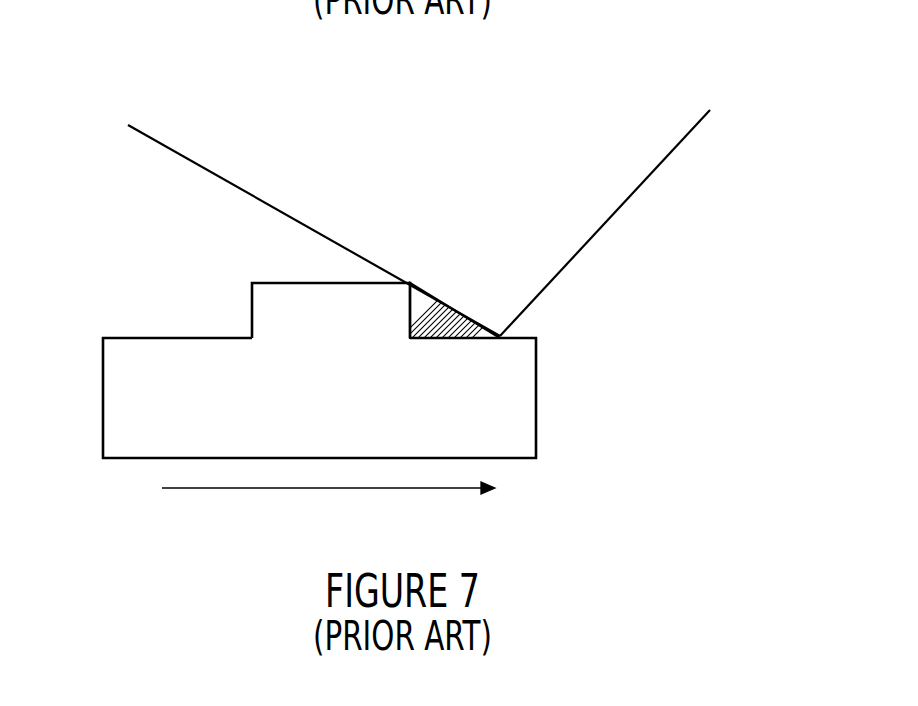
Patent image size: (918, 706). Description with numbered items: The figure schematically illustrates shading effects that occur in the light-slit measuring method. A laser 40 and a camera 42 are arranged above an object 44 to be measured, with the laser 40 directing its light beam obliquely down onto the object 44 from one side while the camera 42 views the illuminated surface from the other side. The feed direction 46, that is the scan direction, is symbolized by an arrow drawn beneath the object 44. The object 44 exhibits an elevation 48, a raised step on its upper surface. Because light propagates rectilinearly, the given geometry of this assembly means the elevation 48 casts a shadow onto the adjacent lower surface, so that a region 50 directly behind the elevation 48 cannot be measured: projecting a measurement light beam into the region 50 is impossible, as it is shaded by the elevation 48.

The laser 40 is at (115, 94).
The camera 42 is at (710, 78).
The object to be measured 44 is at (538, 425).
The feed direction 46 is at (258, 527).
The elevation 48 is at (243, 300).
The region 50 is at (500, 343).